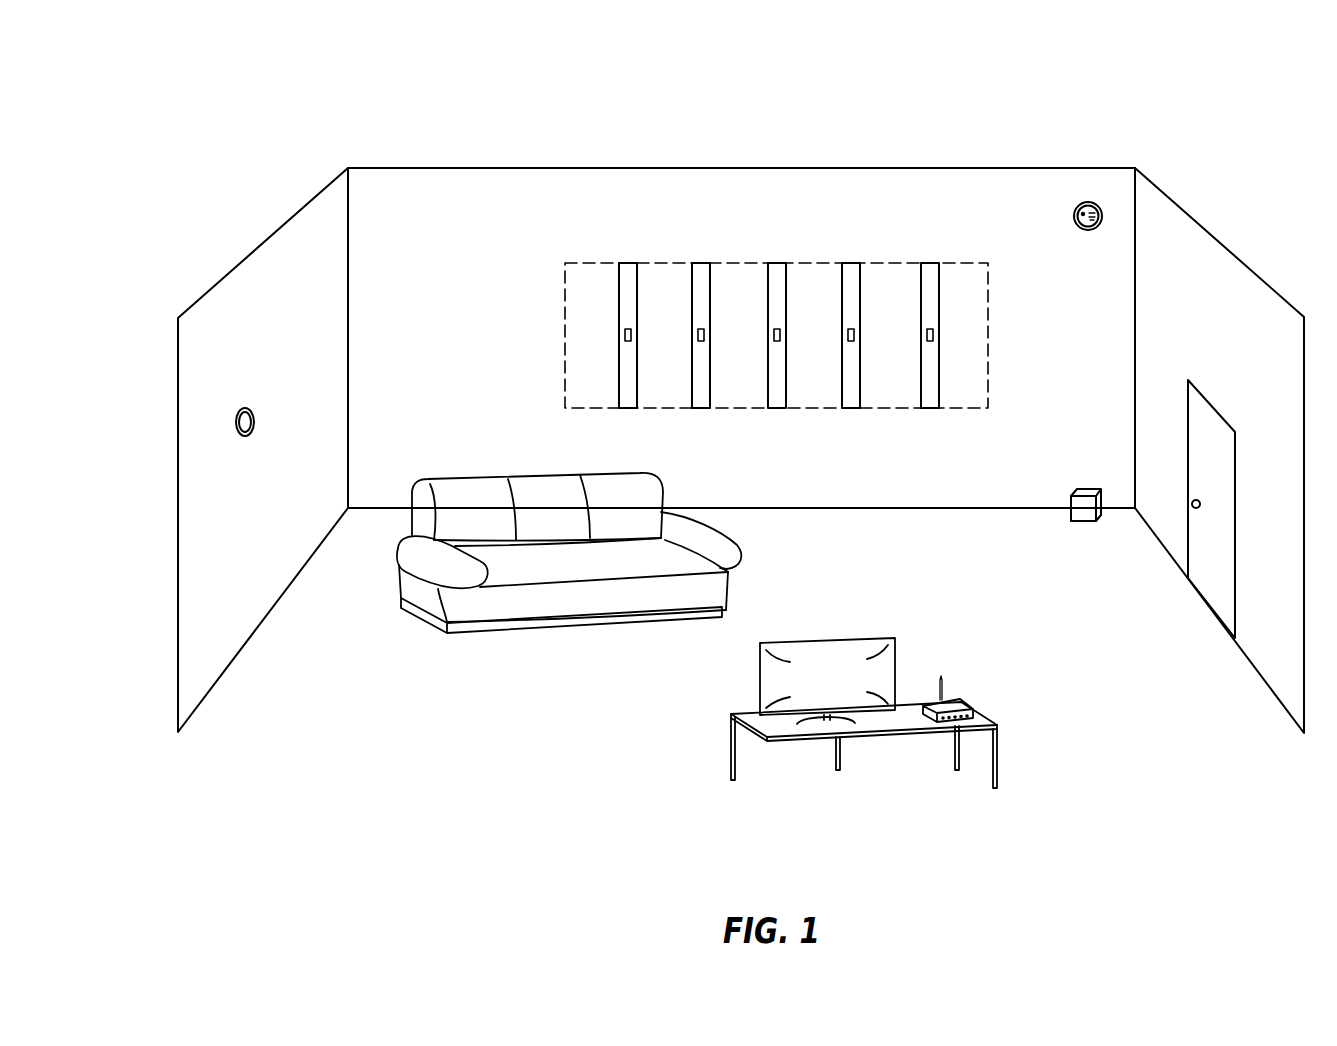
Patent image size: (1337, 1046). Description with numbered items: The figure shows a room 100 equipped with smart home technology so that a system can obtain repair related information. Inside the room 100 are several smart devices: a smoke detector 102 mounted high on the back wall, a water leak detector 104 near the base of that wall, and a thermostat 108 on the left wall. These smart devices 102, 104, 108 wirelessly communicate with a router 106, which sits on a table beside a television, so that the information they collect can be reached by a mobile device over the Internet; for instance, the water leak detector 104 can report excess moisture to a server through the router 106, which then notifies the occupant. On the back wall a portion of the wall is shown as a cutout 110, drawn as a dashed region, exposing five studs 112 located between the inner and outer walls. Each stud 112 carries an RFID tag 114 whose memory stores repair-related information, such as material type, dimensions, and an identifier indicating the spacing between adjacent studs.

The room 100 is at (1216, 126).
The smoke detector 102 is at (1103, 223).
The water leak detector 104 is at (1068, 489).
The router 106 is at (980, 709).
The thermostat 108 is at (228, 422).
The cutout 110 is at (712, 337).
The stud 112 is at (619, 291).
The RFID tag 114 is at (625, 334).